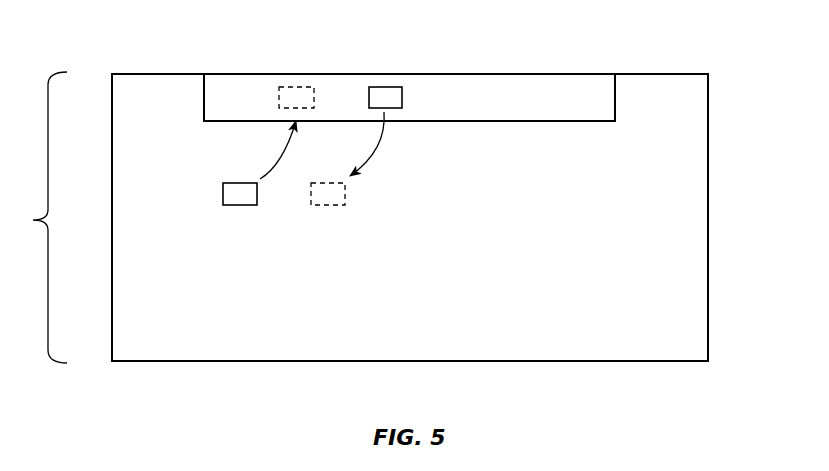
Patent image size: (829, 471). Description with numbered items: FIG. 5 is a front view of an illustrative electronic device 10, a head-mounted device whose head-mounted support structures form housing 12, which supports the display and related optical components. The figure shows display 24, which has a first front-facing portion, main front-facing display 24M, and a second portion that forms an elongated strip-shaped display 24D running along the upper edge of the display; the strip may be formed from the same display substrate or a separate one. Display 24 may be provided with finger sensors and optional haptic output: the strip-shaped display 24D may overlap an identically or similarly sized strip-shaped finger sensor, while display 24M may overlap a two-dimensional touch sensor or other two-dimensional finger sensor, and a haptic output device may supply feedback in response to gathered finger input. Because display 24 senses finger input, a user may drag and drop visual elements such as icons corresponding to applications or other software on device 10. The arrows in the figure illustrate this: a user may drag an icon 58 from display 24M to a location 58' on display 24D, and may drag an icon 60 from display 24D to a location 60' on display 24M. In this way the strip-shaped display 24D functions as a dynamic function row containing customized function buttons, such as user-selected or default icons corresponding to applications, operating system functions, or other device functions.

The electronic device 10 is at (39, 217).
The housing 12 is at (205, 362).
The display 24 is at (733, 180).
The main front-facing display 24M is at (700, 234).
The elongated strip-shaped display 24D is at (537, 80).
The icon 58 is at (259, 189).
The location 58' is at (296, 70).
The icon 60 is at (385, 69).
The location 60' is at (347, 184).